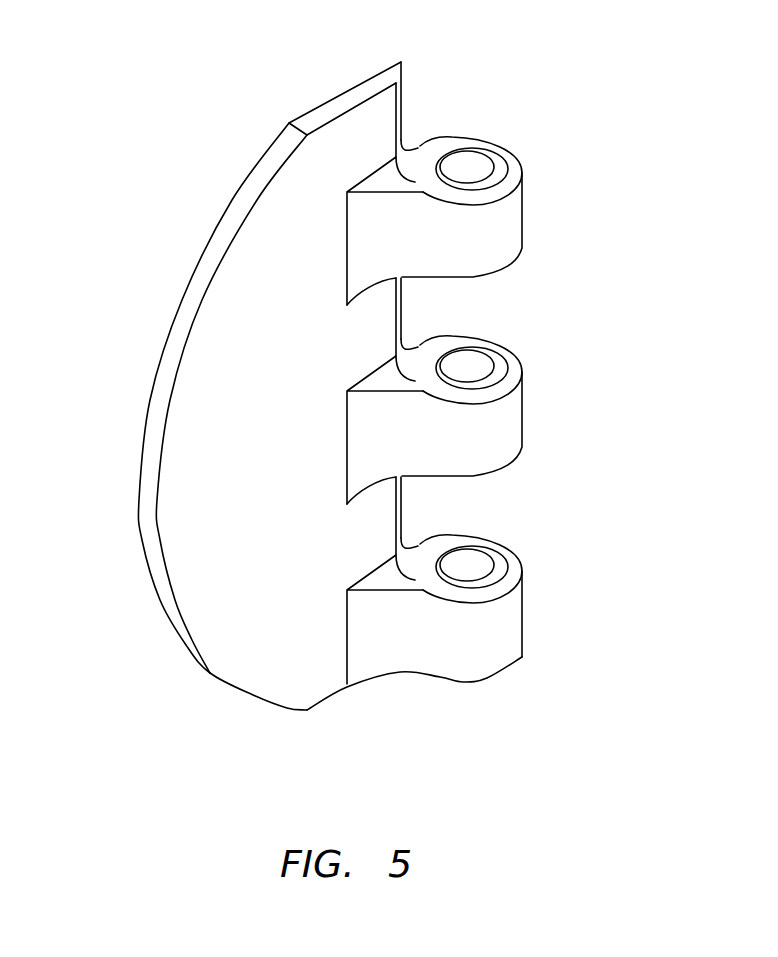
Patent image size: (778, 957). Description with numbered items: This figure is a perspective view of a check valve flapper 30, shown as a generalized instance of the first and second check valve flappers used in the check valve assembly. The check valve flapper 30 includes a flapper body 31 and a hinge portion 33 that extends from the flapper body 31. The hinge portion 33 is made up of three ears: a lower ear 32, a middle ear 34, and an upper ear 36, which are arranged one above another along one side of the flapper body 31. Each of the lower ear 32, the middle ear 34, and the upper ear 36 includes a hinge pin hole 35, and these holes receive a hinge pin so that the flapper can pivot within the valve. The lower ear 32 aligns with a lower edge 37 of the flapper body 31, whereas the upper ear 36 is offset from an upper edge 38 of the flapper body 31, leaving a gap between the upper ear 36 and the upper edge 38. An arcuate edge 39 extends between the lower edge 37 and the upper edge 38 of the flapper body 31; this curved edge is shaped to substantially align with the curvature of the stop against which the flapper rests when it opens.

The check valve flapper 30 is at (163, 180).
The flapper body 31 is at (183, 427).
The lower ear 32 is at (533, 606).
The hinge portion 33 is at (468, 696).
The middle ear 34 is at (531, 414).
The hinge pin hole 35 is at (469, 147).
The upper ear 36 is at (533, 217).
The lower edge 37 is at (330, 707).
The upper edge 38 is at (330, 95).
The arcuate edge 39 is at (149, 586).